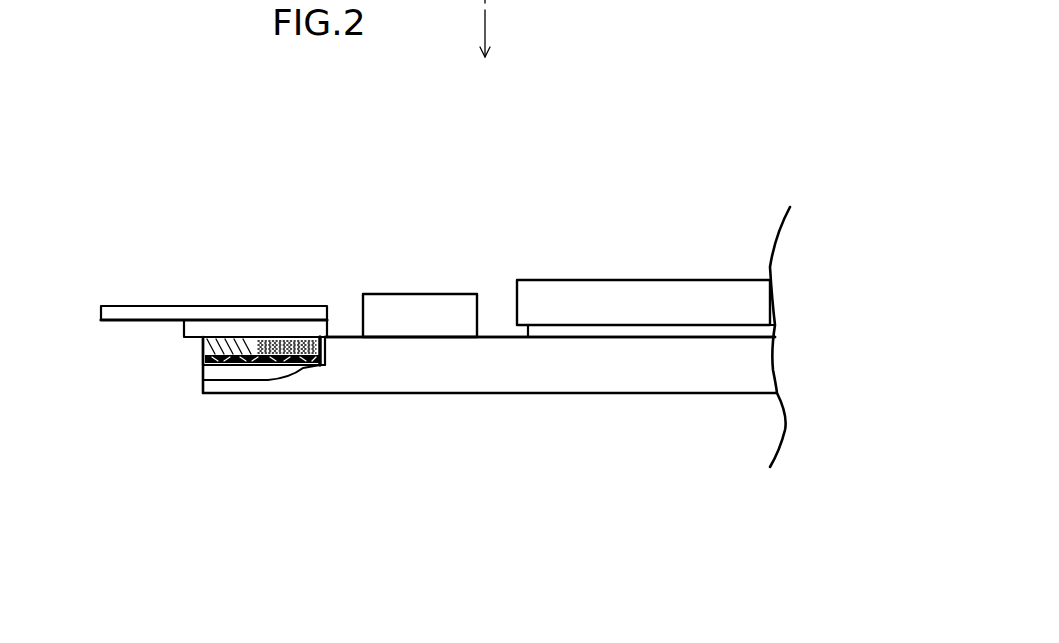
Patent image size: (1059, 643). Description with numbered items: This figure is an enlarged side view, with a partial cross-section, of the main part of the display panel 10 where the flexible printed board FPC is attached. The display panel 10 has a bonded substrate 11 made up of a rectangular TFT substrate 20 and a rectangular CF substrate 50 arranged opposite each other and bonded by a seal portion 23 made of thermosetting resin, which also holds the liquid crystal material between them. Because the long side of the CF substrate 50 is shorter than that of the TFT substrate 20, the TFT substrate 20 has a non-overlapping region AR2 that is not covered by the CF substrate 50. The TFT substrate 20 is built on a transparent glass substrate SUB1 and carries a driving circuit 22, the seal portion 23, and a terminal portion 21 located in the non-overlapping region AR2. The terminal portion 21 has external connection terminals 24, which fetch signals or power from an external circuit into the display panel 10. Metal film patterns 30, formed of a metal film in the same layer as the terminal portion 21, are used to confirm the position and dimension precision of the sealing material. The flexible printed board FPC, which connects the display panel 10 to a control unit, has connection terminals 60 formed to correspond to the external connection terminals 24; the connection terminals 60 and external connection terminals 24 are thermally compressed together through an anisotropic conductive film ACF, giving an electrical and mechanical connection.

The flexible printed board FPC is at (220, 292).
The connection terminal 60 is at (198, 327).
The metal film pattern 30 is at (210, 362).
The terminal portion 21 is at (277, 340).
The external connection terminal 24 is at (296, 340).
The anisotropic conductive film ACF is at (255, 360).
The TFT substrate 20 is at (462, 383).
The substrate SUB1 is at (240, 360).
The bonded substrate 11 is at (537, 371).
The driving circuit 22 is at (428, 304).
The non-overlapping region AR2 is at (496, 301).
The CF substrate 50 is at (715, 288).
The seal portion 23 is at (682, 329).
The display panel 10 is at (639, 242).